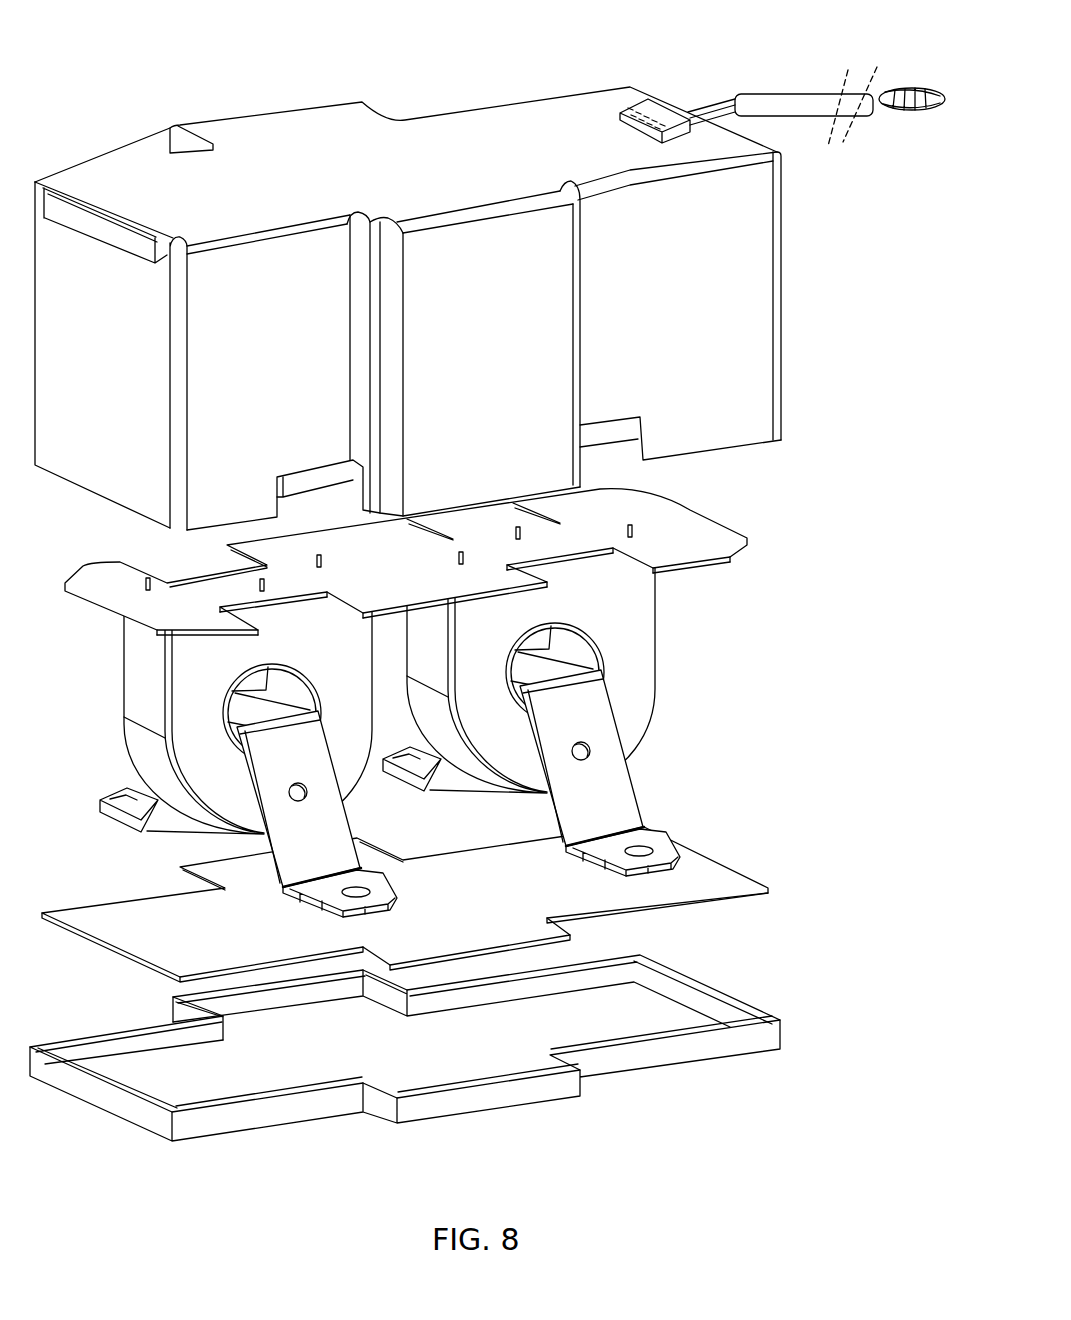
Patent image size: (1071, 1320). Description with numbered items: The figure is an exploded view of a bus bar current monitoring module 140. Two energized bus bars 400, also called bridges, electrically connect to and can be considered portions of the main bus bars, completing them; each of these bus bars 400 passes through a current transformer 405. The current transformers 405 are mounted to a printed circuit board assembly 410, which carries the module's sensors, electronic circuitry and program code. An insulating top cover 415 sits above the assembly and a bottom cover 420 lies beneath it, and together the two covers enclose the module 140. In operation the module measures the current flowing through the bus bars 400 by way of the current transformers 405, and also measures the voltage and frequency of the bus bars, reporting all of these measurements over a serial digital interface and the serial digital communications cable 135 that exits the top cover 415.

The current monitoring module 140 is at (206, 66).
The serial digital communications cable 135 is at (803, 88).
The insulating top cover 415 is at (777, 450).
The printed circuit board assembly 410 is at (740, 562).
The current transformers 405 is at (120, 723).
The energized bus bars 400 is at (98, 802).
The bottom cover 420 is at (747, 998).